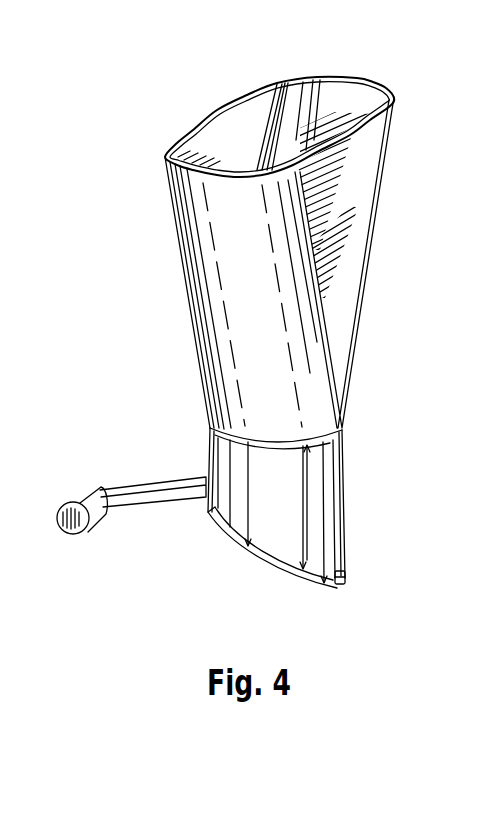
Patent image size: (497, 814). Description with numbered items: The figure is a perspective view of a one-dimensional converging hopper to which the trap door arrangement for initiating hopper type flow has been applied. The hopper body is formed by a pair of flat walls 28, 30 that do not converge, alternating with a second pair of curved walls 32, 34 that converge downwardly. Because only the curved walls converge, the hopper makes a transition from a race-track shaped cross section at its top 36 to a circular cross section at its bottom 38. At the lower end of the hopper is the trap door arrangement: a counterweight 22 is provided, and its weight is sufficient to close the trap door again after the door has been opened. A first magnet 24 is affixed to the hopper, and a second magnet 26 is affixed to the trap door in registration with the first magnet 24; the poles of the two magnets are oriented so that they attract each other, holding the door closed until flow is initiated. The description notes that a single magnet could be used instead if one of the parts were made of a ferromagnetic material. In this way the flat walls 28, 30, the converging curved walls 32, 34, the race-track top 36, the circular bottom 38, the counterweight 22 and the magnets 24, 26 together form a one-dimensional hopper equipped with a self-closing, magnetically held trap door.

The counterweight 22 is at (86, 492).
The first magnet 24 is at (345, 572).
The second magnet 26 is at (343, 588).
The flat wall 28 is at (243, 137).
The flat wall 30 is at (362, 176).
The curved wall 32 is at (210, 279).
The curved wall 34 is at (346, 97).
The top 36 is at (253, 93).
The bottom 38 is at (318, 443).